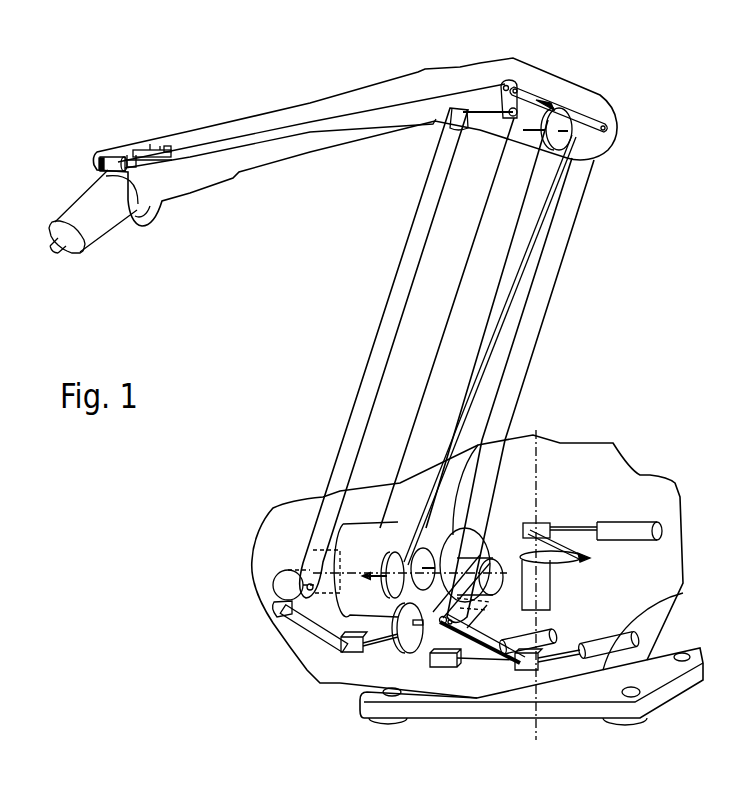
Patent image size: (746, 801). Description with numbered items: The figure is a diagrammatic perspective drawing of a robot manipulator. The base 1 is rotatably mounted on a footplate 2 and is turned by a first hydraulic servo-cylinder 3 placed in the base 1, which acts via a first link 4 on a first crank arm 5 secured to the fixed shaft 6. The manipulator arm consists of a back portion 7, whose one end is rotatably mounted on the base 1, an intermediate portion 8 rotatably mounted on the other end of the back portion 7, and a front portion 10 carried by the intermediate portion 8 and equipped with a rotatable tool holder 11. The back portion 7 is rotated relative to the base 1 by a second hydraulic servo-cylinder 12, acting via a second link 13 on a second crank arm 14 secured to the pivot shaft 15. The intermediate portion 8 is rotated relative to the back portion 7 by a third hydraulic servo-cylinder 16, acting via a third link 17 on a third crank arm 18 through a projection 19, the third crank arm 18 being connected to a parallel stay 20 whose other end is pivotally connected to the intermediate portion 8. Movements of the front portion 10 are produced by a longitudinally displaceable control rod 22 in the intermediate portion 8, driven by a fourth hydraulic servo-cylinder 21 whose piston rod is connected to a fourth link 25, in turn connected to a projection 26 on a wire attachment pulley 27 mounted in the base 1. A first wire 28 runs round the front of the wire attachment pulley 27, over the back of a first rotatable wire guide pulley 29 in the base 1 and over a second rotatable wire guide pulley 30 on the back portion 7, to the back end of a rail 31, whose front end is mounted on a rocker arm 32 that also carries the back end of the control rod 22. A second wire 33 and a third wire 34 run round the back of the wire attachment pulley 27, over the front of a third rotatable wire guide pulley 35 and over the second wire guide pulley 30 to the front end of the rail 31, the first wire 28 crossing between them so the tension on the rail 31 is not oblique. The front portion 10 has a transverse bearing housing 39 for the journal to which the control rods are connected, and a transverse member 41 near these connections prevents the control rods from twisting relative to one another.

The base 1 is at (650, 473).
The footplate 2 is at (663, 675).
The first hydraulic servo-cylinder 3 is at (643, 527).
The first link 4 is at (570, 543).
The first crank arm 5 is at (550, 557).
The fixed shaft 6 is at (540, 588).
The back portion 7 is at (485, 400).
The intermediate portion 8 is at (358, 102).
The front portion 10 is at (80, 202).
The rotatable tool holder 11 is at (50, 242).
The second hydraulic servo-cylinder 12 is at (683, 593).
The second link 13 is at (488, 660).
The second crank arm 14 is at (465, 607).
The pivot shaft 15 is at (460, 563).
The third hydraulic servo-cylinder 16 is at (488, 660).
The third link 17 is at (308, 628).
The third crank arm 18 is at (290, 568).
The projection 19 is at (284, 624).
The parallel stay 20 is at (370, 398).
The fourth hydraulic servo-cylinder 21 is at (527, 643).
The longitudinally displaceable control rod 22 is at (213, 147).
The fourth link 25 is at (430, 660).
The projection 26 is at (397, 643).
The wire attachment pulley 27 is at (397, 617).
The first wire 28 is at (493, 298).
The first rotatable wire guide pulley 29 is at (397, 562).
The second rotatable wire guide pulley 30 is at (560, 117).
The rail 31 is at (525, 90).
The rocker arm 32 is at (503, 100).
The second wire 33 is at (507, 317).
The third wire 34 is at (518, 272).
The third rotatable wire guide pulley 35 is at (467, 483).
The bearing housing 39 is at (117, 170).
The transverse member 41 is at (163, 150).